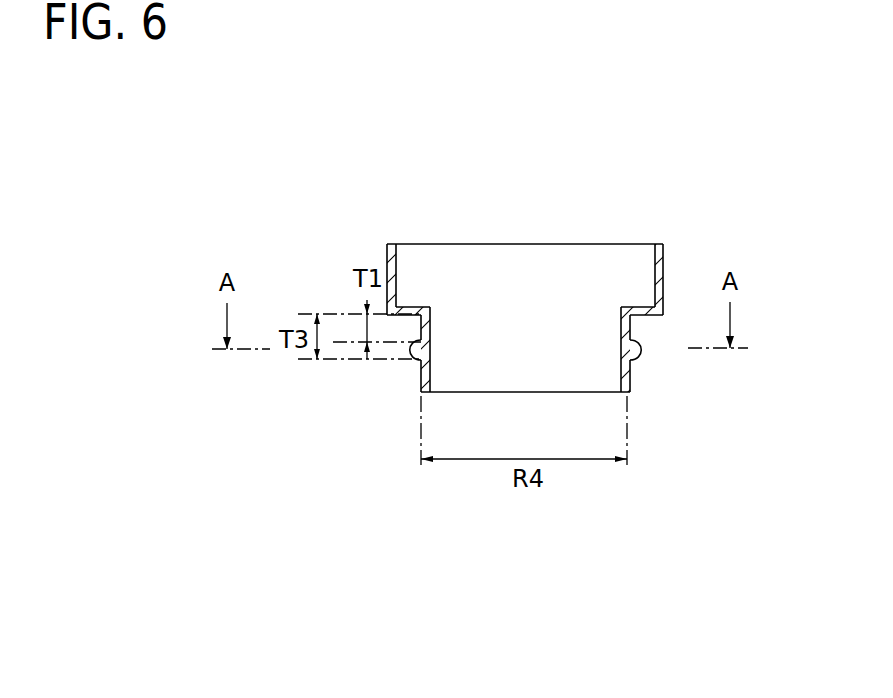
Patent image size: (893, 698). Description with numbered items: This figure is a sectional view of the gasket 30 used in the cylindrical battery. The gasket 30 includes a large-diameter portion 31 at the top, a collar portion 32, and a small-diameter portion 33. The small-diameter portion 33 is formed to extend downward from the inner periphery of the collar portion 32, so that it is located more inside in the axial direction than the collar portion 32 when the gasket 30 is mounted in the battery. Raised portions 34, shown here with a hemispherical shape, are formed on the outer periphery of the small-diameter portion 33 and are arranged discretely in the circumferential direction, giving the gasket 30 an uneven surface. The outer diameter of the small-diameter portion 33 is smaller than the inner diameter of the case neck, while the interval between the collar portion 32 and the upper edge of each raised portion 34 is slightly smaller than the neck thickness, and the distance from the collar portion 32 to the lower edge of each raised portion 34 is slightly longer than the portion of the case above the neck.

The gasket 30 is at (510, 319).
The large-diameter portion 31 is at (397, 300).
The collar portion 32 is at (418, 310).
The small-diameter portion 33 is at (420, 377).
The raised portions 34 is at (411, 347).